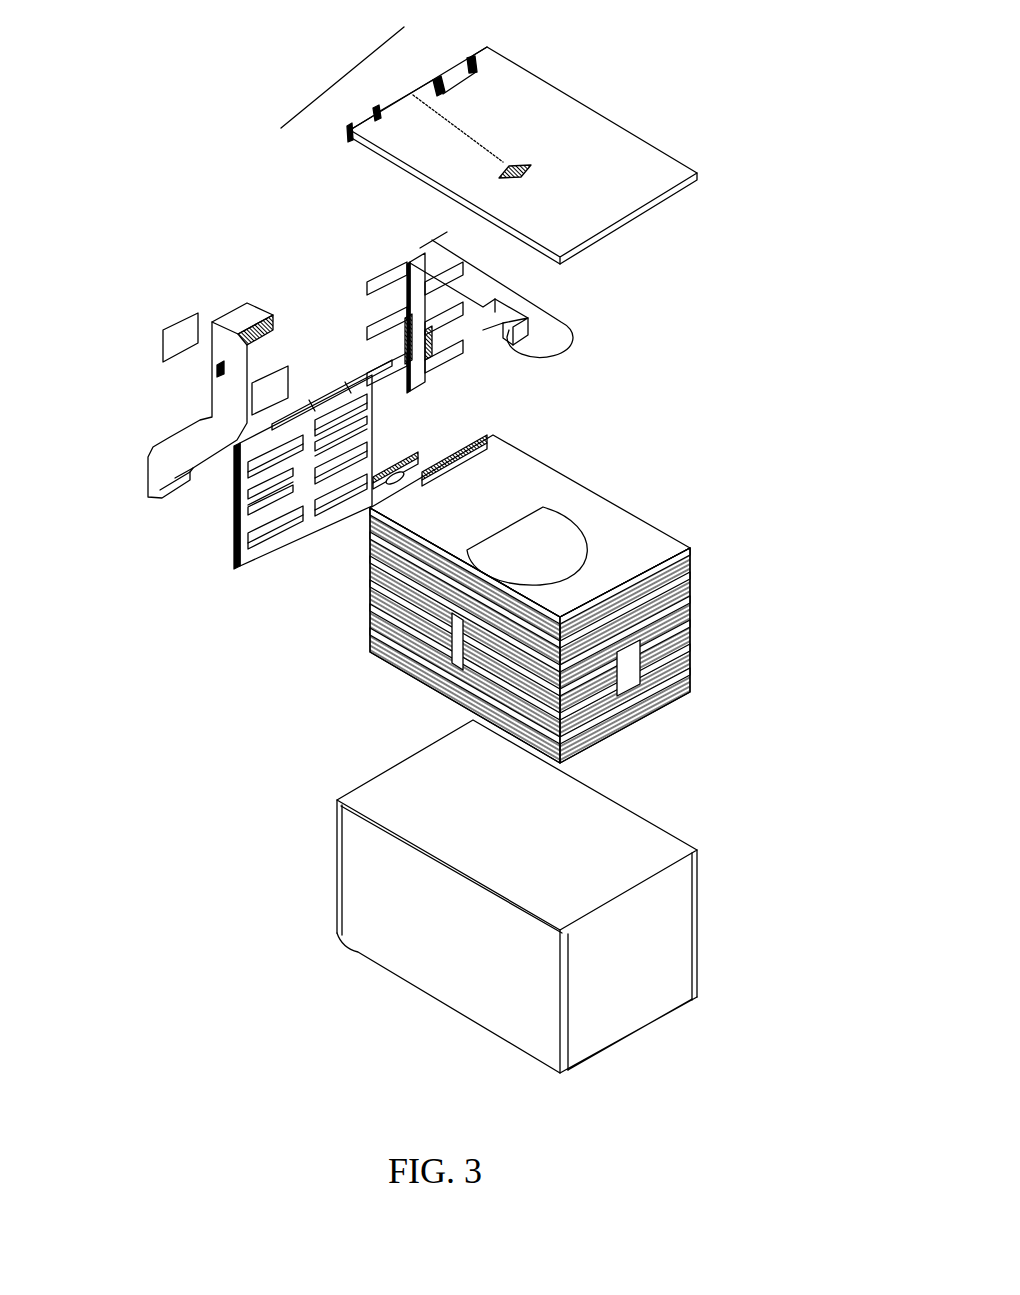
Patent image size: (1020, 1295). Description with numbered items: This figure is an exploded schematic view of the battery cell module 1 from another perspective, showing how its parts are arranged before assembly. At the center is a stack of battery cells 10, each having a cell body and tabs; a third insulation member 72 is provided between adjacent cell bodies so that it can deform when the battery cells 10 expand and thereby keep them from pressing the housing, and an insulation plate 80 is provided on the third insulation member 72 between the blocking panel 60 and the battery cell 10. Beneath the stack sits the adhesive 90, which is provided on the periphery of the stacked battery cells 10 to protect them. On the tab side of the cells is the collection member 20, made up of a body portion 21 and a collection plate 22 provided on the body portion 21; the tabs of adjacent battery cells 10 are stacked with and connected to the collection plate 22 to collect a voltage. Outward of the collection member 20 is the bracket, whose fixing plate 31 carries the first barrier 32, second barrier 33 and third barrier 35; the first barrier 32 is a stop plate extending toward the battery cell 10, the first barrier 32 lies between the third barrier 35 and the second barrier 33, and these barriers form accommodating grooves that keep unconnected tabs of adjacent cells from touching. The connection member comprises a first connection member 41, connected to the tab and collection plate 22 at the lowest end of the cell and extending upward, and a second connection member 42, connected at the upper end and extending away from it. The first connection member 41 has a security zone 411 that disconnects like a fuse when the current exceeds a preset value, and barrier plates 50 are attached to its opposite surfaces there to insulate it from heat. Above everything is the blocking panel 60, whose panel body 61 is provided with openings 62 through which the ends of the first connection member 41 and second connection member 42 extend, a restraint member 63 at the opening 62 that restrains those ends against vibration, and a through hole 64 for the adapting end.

The battery cell module 1 is at (554, 16).
The battery cell 10 is at (526, 599).
The collection member 20 is at (315, 203).
The body portion 21 is at (408, 256).
The collection plate 22 is at (443, 247).
The fixing plate 31 is at (300, 472).
The first barrier 32 is at (366, 428).
The second barrier 33 is at (374, 460).
The third barrier 35 is at (347, 411).
The first connection member 41 is at (189, 400).
The security zone 411 is at (216, 371).
The second connection member 42 is at (421, 457).
The barrier plate 50 is at (178, 337).
The blocking panel 60 is at (342, 76).
The panel body 61 is at (349, 126).
The opening 62 is at (385, 107).
The restraint member 63 is at (466, 62).
The through hole 64 is at (432, 88).
The third insulation member 72 is at (650, 543).
The insulation plate 80 is at (553, 538).
The adhesive 90 is at (683, 931).